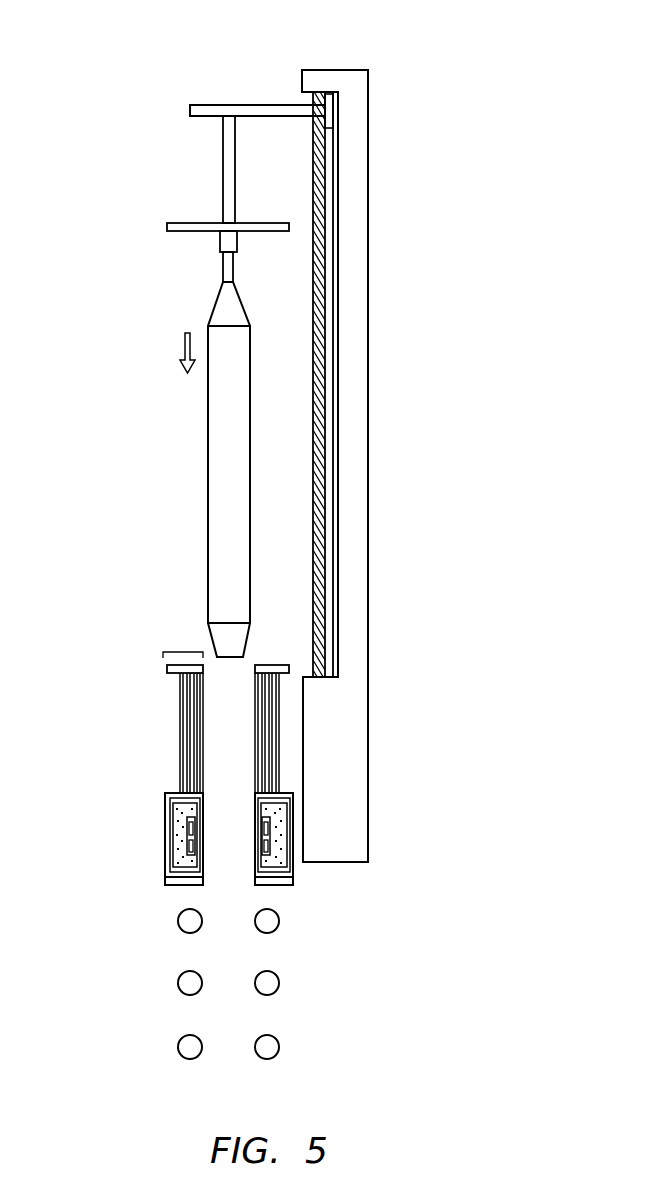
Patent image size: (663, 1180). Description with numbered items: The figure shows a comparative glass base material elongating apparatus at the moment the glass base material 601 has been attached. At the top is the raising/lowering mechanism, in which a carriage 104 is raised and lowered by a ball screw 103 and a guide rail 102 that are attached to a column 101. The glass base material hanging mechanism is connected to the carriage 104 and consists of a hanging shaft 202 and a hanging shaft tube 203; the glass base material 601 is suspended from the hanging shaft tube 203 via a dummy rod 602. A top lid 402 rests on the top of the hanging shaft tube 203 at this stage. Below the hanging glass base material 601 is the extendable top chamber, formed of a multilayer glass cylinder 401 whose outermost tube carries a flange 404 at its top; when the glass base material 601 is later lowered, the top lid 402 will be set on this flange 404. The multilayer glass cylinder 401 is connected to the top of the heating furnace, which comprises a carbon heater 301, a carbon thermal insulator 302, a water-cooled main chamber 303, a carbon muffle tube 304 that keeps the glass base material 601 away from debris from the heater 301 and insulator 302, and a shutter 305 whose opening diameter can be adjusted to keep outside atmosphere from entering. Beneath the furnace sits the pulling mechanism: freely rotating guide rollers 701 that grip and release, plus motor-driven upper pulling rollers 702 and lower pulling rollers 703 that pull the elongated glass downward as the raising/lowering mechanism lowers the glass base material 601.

The column 101 is at (352, 463).
The guide rail 102 is at (338, 318).
The ball screw 103 is at (322, 400).
The carriage 104 is at (232, 106).
The hanging shaft 202 is at (222, 197).
The hanging shaft tube 203 is at (220, 242).
The dummy rod 602 is at (223, 267).
The top lid 402 is at (255, 231).
The glass base material 601 is at (218, 445).
The multilayer glass cylinder 401 is at (185, 652).
The flange 404 is at (167, 667).
The carbon thermal insulator 302 is at (167, 818).
The carbon heater 301 is at (187, 843).
The water-cooled main chamber 303 is at (167, 860).
The shutter 305 is at (167, 885).
The carbon muffle tube 304 is at (205, 852).
The guide rollers 701 is at (188, 922).
The upper pulling rollers 702 is at (188, 983).
The lower pulling rollers 703 is at (188, 1045).